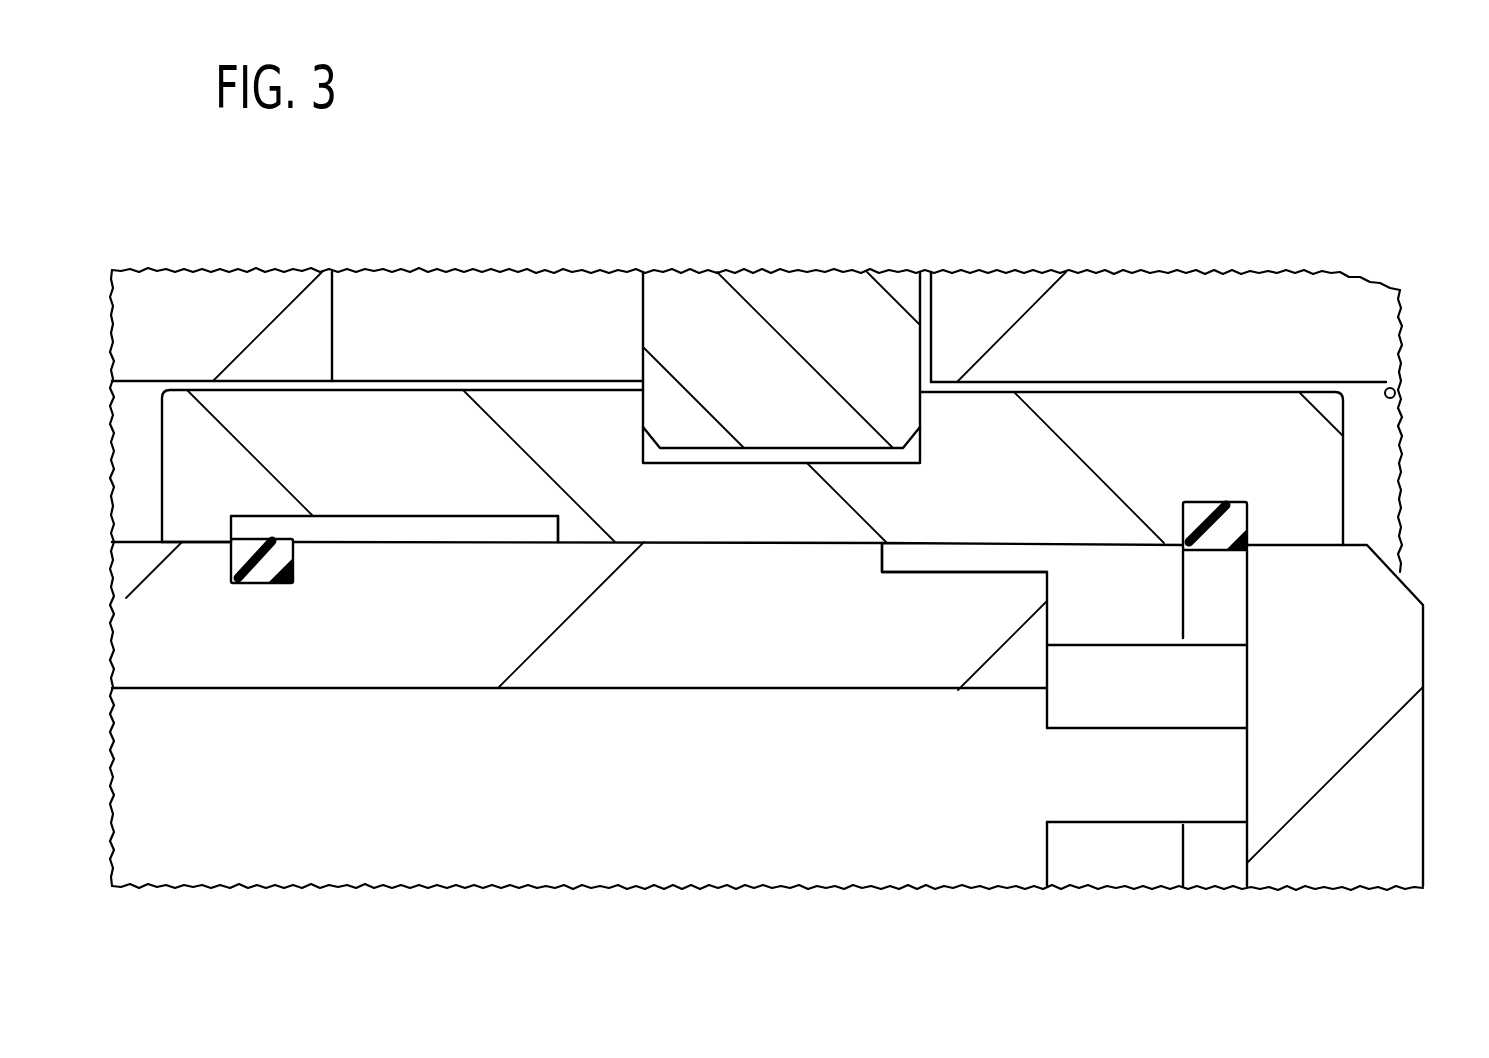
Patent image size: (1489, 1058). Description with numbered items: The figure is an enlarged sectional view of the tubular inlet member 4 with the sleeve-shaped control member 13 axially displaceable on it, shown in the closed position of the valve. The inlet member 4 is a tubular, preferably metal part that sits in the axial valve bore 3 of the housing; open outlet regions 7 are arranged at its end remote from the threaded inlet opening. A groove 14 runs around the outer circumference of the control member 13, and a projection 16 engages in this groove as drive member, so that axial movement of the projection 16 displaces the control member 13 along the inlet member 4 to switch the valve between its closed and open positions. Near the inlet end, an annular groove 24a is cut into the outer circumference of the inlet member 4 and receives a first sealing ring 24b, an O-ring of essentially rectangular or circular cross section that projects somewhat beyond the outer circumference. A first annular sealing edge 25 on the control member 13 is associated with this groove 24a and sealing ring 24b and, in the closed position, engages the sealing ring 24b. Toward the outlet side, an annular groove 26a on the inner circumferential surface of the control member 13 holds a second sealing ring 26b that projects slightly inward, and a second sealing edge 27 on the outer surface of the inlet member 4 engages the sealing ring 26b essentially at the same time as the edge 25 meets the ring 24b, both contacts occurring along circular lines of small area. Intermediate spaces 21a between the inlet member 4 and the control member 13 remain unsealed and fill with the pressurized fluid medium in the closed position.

The valve bore 3 is at (1395, 391).
The tubular inlet member 4 is at (407, 560).
The outlet regions 7 is at (1097, 847).
The sleeve-shaped control member 13 is at (968, 445).
The groove 14 is at (779, 464).
The projection 16 is at (681, 332).
The intermediate spaces 21a is at (1036, 560).
The annular groove 24a is at (258, 577).
The first sealing ring 24b is at (283, 545).
The first annular sealing edge 25 is at (232, 535).
The annular groove 26a is at (1231, 508).
The second sealing ring 26b is at (1188, 508).
The second sealing edge 27 is at (1250, 553).